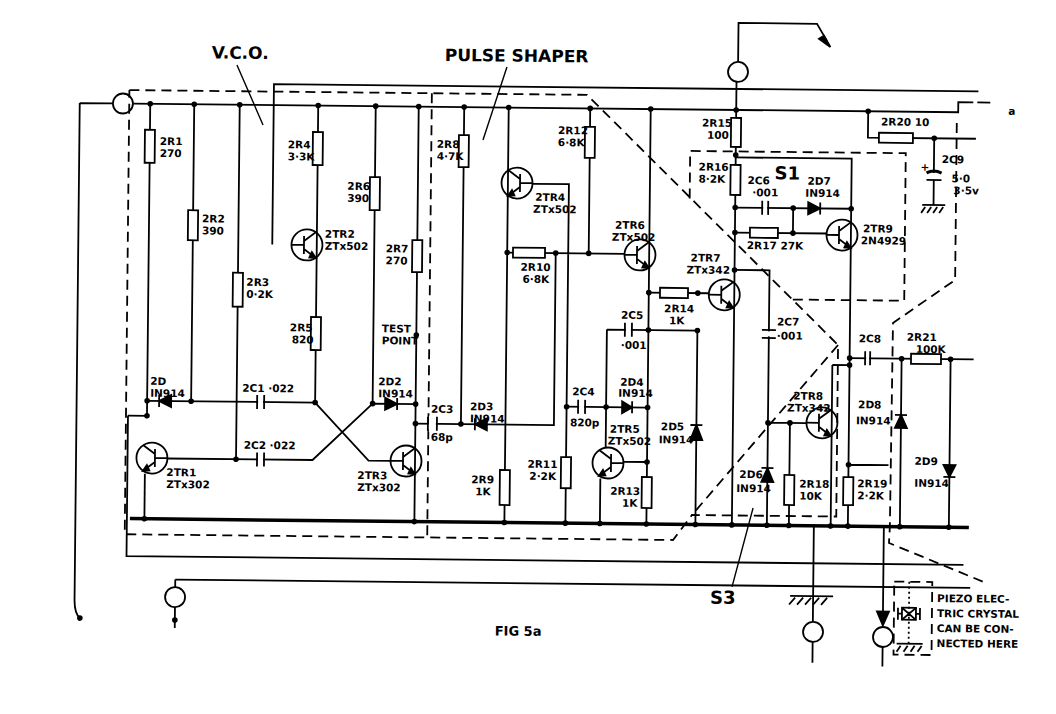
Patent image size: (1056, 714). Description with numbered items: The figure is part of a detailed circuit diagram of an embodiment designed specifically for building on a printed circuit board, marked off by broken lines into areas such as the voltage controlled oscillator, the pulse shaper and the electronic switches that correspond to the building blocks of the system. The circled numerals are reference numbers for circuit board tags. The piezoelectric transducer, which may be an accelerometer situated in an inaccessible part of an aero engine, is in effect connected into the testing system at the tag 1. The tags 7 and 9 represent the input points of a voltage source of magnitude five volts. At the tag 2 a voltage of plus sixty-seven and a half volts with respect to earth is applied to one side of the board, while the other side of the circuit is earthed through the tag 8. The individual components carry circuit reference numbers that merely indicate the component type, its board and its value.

The circuit board tag 1 is at (883, 596).
The circuit board tag 2 is at (786, 53).
The circuit board tag 7 is at (103, 356).
The circuit board tag 8 is at (819, 595).
The circuit board tag 9 is at (237, 604).